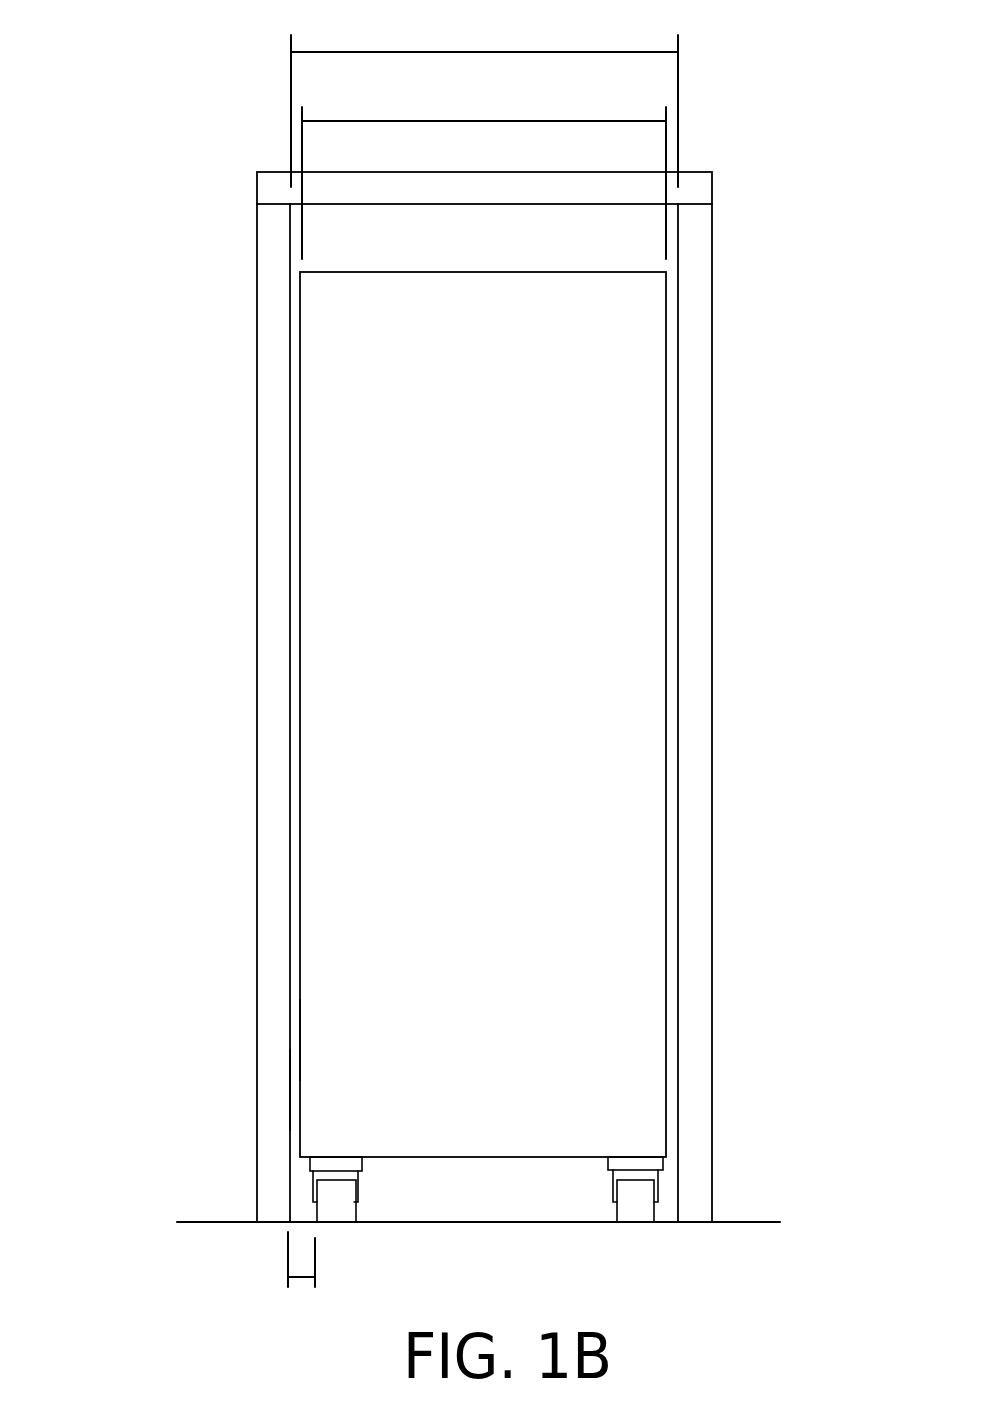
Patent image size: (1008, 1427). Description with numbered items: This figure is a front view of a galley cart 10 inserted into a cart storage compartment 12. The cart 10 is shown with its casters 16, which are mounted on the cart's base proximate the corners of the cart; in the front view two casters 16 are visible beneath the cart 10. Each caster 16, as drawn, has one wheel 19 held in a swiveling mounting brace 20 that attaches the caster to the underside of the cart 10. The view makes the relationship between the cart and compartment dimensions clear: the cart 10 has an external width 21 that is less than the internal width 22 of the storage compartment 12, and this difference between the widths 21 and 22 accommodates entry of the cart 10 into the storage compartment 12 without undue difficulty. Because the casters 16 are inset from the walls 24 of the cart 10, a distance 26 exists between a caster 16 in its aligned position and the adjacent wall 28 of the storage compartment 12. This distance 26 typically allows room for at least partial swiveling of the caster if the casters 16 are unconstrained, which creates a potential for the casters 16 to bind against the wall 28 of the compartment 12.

The galley cart 10 is at (620, 567).
The cart storage compartment 12 is at (443, 232).
The casters 16 is at (345, 1215).
The wheel 19 is at (335, 1202).
The swiveling mounting brace 20 is at (355, 1162).
The external width 21 is at (442, 121).
The internal width 22 is at (493, 52).
The walls 24 is at (300, 1038).
The distance 26 is at (303, 1288).
The wall 28 is at (292, 1088).